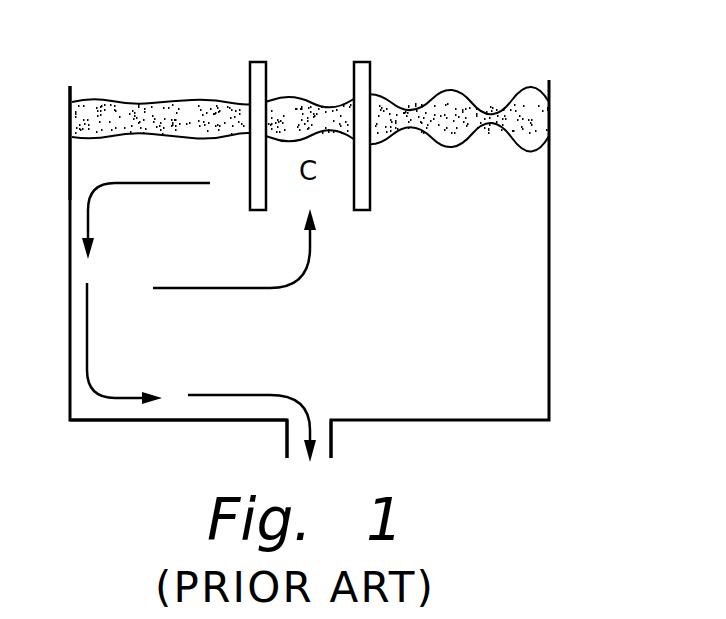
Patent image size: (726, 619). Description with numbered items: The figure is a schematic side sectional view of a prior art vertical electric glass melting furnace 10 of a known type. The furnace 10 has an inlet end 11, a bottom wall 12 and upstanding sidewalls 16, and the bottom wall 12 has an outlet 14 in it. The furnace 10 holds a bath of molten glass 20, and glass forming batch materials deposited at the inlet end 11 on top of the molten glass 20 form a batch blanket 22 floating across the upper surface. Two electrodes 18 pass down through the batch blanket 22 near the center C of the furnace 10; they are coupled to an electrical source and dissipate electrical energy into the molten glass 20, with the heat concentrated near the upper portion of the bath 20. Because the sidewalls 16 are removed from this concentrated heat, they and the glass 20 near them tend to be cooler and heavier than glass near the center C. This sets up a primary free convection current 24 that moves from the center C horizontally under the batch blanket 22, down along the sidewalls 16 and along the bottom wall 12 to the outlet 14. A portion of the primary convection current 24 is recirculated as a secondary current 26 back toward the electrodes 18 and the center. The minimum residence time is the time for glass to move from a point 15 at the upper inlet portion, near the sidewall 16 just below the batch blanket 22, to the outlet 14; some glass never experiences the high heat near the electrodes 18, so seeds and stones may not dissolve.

The vertical glass melting furnace 10 is at (536, 64).
The inlet end 11 is at (70, 100).
The bottom wall 12 is at (152, 422).
The outlet 14 is at (333, 442).
The point at upper inlet portion 15 is at (85, 160).
The upstanding sidewalls 16 is at (68, 250).
The electrodes 18 is at (352, 80).
The bath of molten glass 20 is at (453, 341).
The batch blanket 22 is at (174, 112).
The primary free convection current 24 is at (87, 337).
The secondary current 26 is at (226, 290).